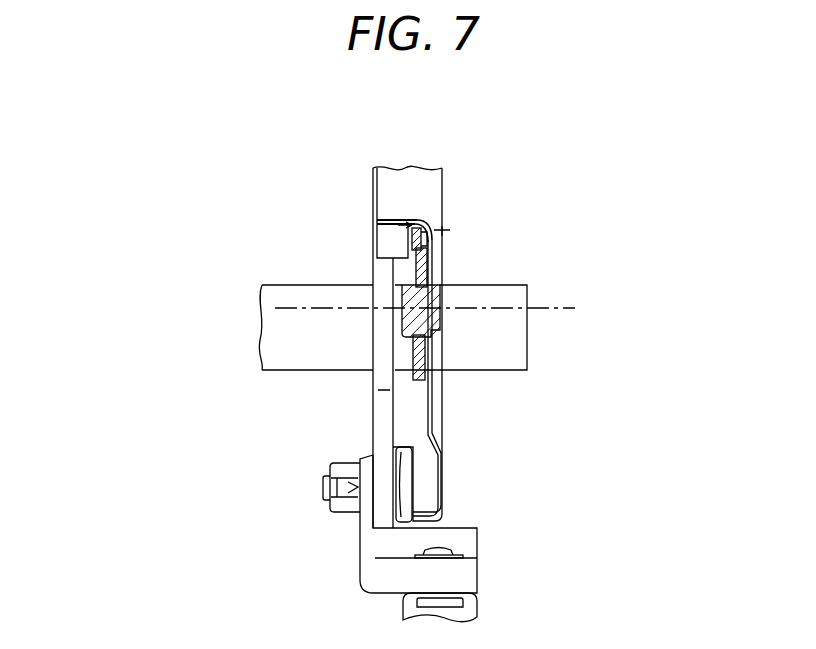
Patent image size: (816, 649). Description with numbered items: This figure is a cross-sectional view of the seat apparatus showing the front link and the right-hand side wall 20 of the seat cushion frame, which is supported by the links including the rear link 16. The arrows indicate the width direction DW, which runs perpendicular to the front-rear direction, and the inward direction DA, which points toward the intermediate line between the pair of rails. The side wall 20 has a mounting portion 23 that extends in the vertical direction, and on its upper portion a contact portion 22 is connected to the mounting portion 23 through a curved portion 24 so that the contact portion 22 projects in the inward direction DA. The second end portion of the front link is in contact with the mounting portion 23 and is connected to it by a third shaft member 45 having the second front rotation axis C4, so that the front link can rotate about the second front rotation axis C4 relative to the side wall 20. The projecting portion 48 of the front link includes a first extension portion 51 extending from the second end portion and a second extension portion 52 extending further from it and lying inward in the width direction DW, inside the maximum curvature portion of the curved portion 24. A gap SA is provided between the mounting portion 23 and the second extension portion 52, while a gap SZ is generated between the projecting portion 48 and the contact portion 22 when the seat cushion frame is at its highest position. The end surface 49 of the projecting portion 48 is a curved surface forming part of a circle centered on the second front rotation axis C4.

The rear link 16 is at (372, 422).
The side wall 20 is at (443, 493).
The contact portion 22 is at (404, 221).
The mounting portion 23 is at (430, 411).
The curved portion 24 is at (431, 227).
The third shaft member 45 is at (404, 328).
The projecting portion 48 is at (270, 296).
The end surface 49 is at (418, 217).
The first extension portion 51 is at (410, 265).
The second extension portion 52 is at (412, 232).
The second front rotation axis C4 is at (569, 305).
The gap SZ is at (408, 231).
The gap SA is at (443, 229).
The inward direction DA is at (403, 114).
The width direction DW is at (217, 565).